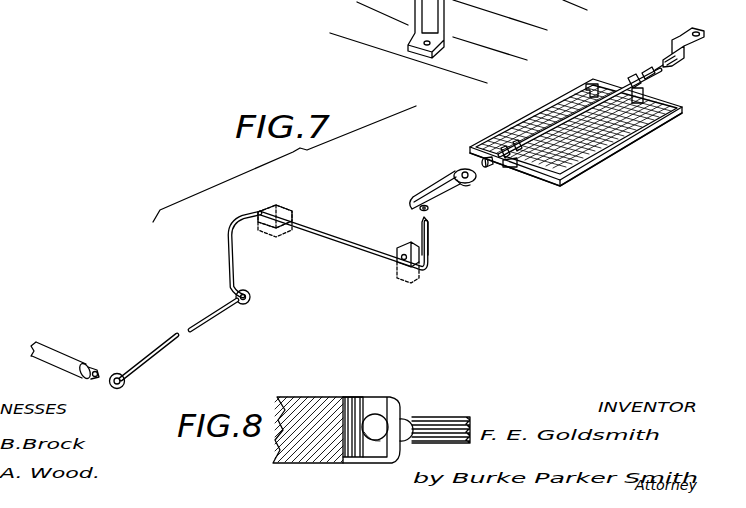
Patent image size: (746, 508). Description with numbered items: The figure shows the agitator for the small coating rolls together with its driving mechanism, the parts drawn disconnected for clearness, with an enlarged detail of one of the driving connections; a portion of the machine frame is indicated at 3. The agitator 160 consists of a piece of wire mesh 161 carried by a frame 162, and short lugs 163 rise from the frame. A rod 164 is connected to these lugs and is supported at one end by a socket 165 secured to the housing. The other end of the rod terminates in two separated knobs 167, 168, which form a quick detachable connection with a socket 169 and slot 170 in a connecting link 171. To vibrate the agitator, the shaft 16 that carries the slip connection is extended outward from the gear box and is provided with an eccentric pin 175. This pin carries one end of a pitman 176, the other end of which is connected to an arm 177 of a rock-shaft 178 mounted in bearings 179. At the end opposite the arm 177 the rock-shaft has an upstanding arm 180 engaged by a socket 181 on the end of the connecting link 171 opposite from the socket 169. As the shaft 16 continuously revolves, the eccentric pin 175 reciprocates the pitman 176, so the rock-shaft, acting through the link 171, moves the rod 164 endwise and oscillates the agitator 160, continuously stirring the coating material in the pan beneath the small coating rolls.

In FIG. 7, the frame bracket 3 is at (282, 20).
In FIG. 7, the shaft 16 is at (70, 358).
In FIG. 7, the agitator 160 is at (650, 138).
In FIG. 7, the wire mesh 161 is at (596, 133).
In FIG. 7, the frame 162 is at (565, 186).
In FIG. 7, the lugs 163 is at (632, 75).
In FIG. 7, the rod 164 is at (570, 112).
In FIG. 7, the socket 165 is at (666, 52).
In FIG. 8, the knob 167 is at (403, 414).
In FIG. 7, the knob 168 is at (489, 166).
In FIG. 8, the knob 168 is at (371, 412).
In FIG. 8, the socket 169 is at (351, 397).
In FIG. 8, the slot 170 is at (391, 400).
In FIG. 7, the connecting link 171 is at (424, 195).
In FIG. 8, the connecting link 171 is at (320, 458).
In FIG. 7, the eccentric pin 175 is at (99, 370).
In FIG. 7, the pitman 176 is at (161, 358).
In FIG. 7, the arm 177 is at (232, 260).
In FIG. 7, the rock-shaft 178 is at (323, 233).
In FIG. 7, the bearings 179 is at (280, 212).
In FIG. 7, the upstanding arm 180 is at (428, 240).
In FIG. 7, the socket 181 is at (429, 208).